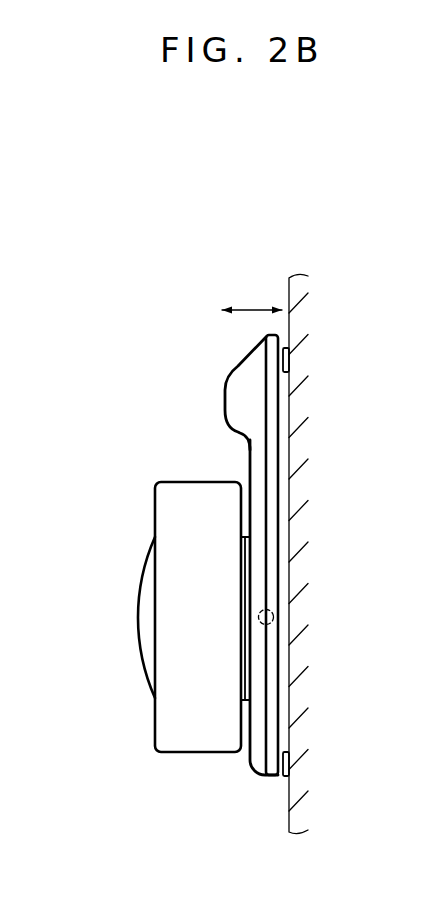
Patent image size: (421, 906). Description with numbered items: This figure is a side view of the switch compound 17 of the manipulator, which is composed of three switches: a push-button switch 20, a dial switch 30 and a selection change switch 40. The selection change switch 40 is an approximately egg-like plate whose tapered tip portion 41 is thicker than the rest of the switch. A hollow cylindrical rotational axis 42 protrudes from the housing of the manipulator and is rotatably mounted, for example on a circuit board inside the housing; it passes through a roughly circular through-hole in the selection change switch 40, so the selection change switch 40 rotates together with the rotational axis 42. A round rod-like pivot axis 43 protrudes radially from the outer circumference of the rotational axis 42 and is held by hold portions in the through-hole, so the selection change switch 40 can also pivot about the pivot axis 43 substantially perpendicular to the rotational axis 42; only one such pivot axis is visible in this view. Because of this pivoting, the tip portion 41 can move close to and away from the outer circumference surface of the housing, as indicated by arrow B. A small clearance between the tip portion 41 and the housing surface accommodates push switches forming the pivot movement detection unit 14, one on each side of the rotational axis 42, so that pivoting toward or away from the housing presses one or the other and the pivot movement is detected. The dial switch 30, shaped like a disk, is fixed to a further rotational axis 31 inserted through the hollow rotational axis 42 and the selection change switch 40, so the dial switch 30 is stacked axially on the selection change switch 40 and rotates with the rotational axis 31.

The pivot movement detection unit 14 is at (289, 360).
The switch compound 17 is at (222, 218).
The push-button switch 20 is at (144, 572).
The dial switch 30 is at (197, 753).
The rotational axis 31 is at (247, 550).
The selection change switch 40 is at (247, 458).
The tip portion 41 is at (235, 375).
The rotational axis 42 is at (282, 706).
The pivot axis 43 is at (274, 615).